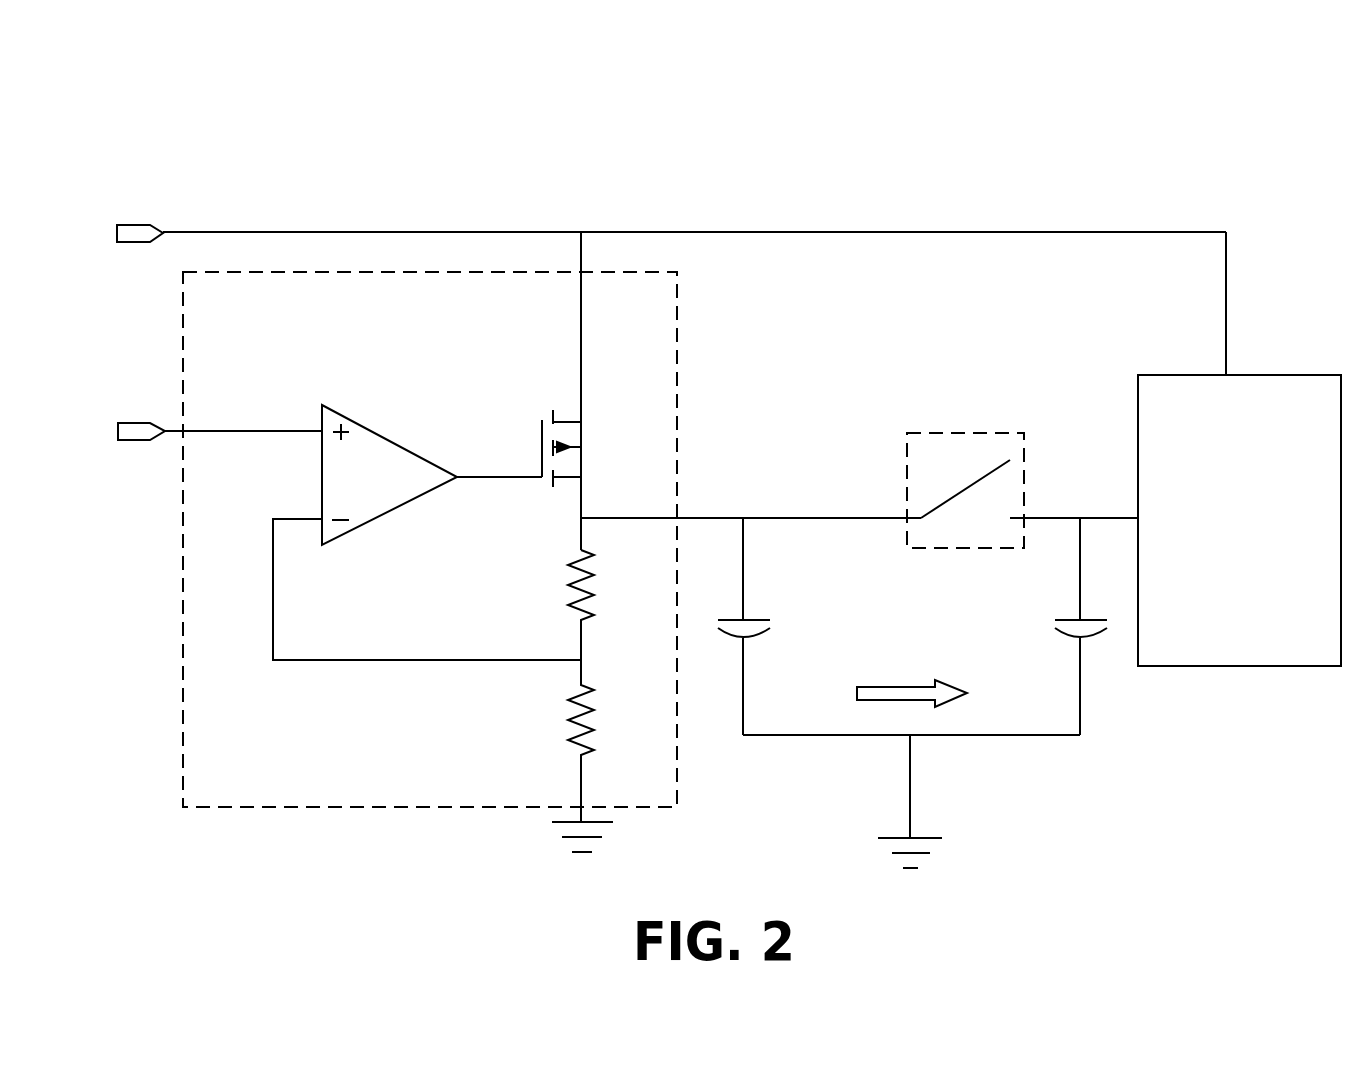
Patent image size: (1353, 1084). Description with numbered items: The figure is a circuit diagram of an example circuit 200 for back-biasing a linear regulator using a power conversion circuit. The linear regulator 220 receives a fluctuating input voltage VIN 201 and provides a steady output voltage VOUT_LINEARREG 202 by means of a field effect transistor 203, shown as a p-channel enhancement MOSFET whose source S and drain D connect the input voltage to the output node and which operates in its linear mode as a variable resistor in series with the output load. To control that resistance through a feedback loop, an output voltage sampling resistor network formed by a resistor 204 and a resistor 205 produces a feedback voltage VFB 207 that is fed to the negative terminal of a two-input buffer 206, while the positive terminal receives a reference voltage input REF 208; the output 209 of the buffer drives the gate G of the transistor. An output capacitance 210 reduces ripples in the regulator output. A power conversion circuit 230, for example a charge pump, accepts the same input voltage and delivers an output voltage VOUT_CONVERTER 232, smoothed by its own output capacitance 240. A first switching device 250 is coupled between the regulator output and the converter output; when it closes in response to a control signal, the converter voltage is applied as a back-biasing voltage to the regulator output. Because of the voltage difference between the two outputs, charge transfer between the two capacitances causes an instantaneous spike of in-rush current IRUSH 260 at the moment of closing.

The circuit 200 is at (108, 117).
The input voltage VIN 201 is at (110, 265).
The output voltage VOUT_LINEARREG 202 is at (816, 493).
The field effect transistor 203 is at (643, 460).
The resistor 204 is at (557, 601).
The resistor 205 is at (557, 738).
The two-input buffer 206 is at (383, 491).
The feedback voltage VFB 207 is at (269, 550).
The reference voltage input REF 208 is at (107, 465).
The output of the buffer 209 is at (500, 430).
The output capacitance 210 is at (802, 606).
The linear regulator 220 is at (182, 377).
The power conversion circuit 230 is at (1263, 552).
The output voltage VOUT_CONVERTER 232 is at (1082, 503).
The output capacitance 240 is at (1075, 606).
The first switching device 250 is at (1018, 386).
The in-rush current IRUSH 260 is at (963, 666).